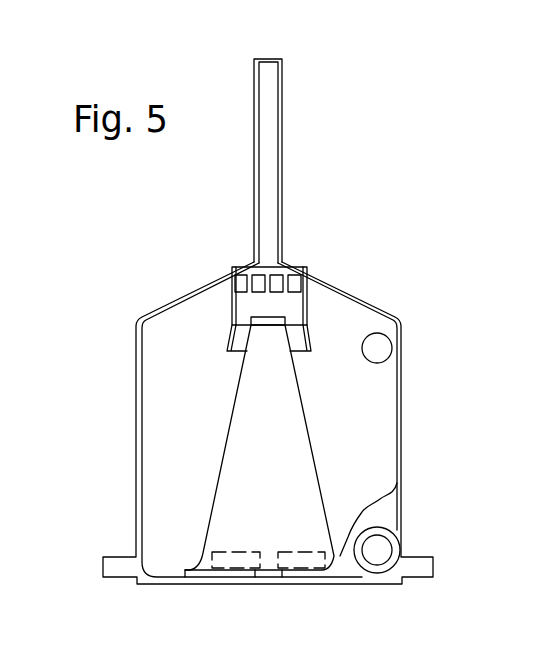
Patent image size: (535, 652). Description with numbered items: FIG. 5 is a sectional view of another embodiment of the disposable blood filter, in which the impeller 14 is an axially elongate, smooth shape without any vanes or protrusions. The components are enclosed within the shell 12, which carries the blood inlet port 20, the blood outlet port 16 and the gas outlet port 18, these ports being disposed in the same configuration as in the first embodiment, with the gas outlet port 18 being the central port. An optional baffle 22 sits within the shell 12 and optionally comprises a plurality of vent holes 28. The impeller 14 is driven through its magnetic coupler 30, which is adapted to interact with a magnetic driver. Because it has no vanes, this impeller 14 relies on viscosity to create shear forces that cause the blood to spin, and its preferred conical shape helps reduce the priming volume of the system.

The shell 12 is at (400, 397).
The impeller 14 is at (255, 470).
The blood outlet port 16 is at (386, 338).
The gas outlet port 18 is at (282, 162).
The blood inlet port 20 is at (390, 527).
The baffle 22 is at (306, 308).
The vent holes 28 is at (260, 280).
The magnetic coupler 30 is at (227, 558).